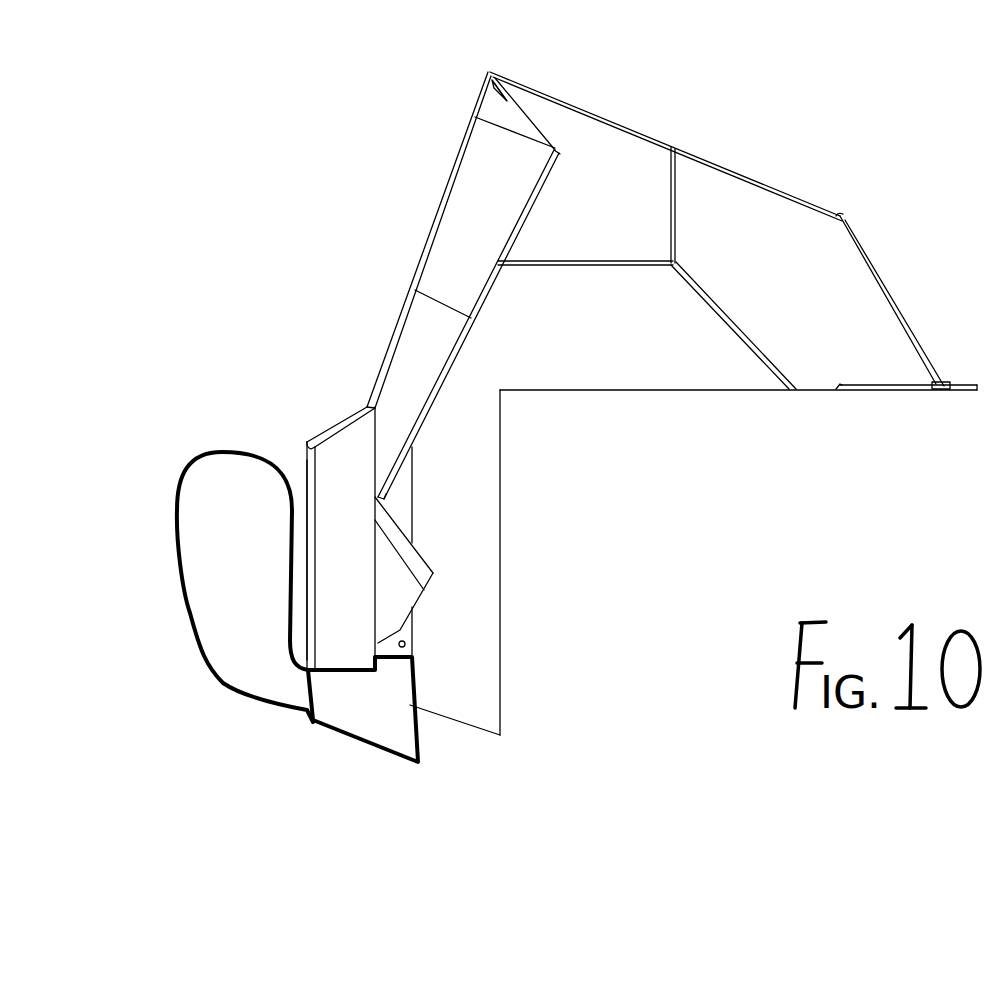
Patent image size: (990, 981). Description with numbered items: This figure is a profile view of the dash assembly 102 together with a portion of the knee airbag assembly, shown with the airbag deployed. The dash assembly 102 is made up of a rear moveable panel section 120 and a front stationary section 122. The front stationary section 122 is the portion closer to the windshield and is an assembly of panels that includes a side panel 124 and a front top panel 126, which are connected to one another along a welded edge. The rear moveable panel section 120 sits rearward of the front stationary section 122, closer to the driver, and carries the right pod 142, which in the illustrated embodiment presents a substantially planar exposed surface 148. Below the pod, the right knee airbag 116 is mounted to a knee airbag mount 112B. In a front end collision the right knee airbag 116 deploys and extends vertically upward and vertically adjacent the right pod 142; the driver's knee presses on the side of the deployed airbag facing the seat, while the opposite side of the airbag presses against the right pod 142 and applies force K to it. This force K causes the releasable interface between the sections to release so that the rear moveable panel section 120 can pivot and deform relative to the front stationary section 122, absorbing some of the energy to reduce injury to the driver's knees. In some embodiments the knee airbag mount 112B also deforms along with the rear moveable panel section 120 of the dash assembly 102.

The dash assembly 102 is at (662, 271).
The knee airbag mount 112B is at (332, 720).
The right knee airbag 116 is at (228, 470).
The rear moveable panel section 120 is at (493, 355).
The front stationary section 122 is at (715, 415).
The side panel 124 is at (485, 603).
The front top panel 126 is at (860, 241).
The right pod 142 is at (348, 442).
The substantially planar exposed surface 148 is at (305, 483).
The force K is at (168, 576).